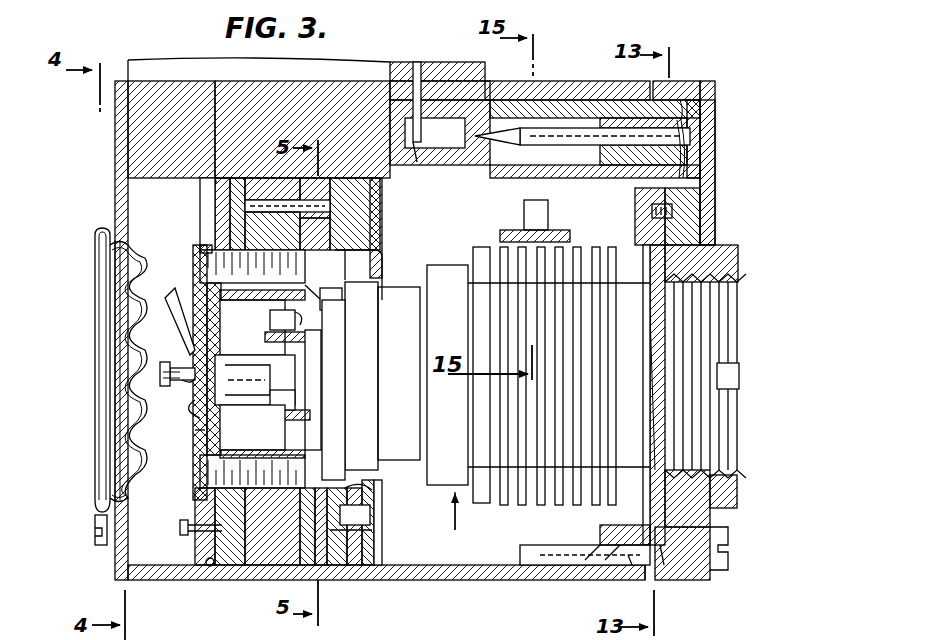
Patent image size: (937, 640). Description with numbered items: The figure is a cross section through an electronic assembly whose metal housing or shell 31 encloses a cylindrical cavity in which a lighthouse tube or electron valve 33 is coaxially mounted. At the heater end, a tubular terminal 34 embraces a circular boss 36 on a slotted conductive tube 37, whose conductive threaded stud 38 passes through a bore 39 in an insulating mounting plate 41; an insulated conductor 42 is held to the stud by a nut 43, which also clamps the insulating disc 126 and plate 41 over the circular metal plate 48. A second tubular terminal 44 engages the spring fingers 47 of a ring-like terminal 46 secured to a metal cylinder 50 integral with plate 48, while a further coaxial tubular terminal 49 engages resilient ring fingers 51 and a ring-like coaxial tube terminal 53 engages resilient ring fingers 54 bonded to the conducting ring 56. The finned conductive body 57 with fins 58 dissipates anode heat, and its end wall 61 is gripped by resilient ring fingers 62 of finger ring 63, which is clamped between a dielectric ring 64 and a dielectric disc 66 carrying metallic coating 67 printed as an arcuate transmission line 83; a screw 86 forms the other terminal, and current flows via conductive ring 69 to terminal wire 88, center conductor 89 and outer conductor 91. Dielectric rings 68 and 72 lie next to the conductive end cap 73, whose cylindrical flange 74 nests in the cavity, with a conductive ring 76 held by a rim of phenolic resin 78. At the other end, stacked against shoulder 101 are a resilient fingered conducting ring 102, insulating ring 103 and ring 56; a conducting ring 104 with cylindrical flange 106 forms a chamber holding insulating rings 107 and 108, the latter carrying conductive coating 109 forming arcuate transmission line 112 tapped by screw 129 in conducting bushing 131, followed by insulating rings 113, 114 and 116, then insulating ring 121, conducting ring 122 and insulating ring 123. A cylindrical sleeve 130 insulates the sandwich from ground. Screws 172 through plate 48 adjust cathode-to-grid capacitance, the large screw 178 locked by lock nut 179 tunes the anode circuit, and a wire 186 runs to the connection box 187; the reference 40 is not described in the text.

The metal housing or shell 31 is at (160, 78).
The lighthouse tube or electron valve 33 is at (508, 369).
The tubular terminal 34 is at (300, 344).
The circular boss 36 is at (265, 393).
The slotted conductive tube 37 is at (195, 418).
The conductive threaded stud 38 is at (185, 368).
The bore 39 is at (182, 382).
The flexible cable 40 is at (121, 386).
The insulating mounting plate 41 is at (196, 432).
The insulated conductor 42 is at (178, 300).
The nut 43 is at (185, 340).
The tubular terminal 44 is at (268, 410).
The ring-like terminal 46 is at (296, 325).
The spring fingers 47 is at (290, 425).
The circular metal plate 48 is at (213, 566).
The coaxial tubular terminal 49 is at (330, 380).
The metal cylinder 50 is at (245, 305).
The resilient ring fingers 51 is at (335, 300).
The ring-like coaxial tube terminal 53 is at (366, 376).
The resilient ring fingers 54 is at (372, 266).
The conducting plate or ring 56 is at (345, 568).
The conductive body 57 is at (495, 319).
The fins 58 is at (538, 508).
The end wall 61 is at (647, 341).
The resilient ring fingers 62 is at (662, 299).
The finger ring 63 is at (740, 251).
The dielectric ring 64 is at (633, 560).
The dielectric disc 66 is at (652, 572).
The metallic coating 67 is at (735, 377).
The dielectric ring 68 is at (673, 570).
The conductive ring 69 is at (683, 238).
The dielectric ring 72 is at (668, 224).
The conductive end cap 73 is at (716, 86).
The cylindrical flange 74 is at (575, 560).
The conductive ring or washer 76 is at (575, 545).
The rim of phenolic resin 78 is at (608, 560).
The arcuate transmission line 83 is at (618, 528).
The screw 86 is at (674, 210).
The terminal wire 88 is at (685, 171).
The center conductor 89 is at (566, 128).
The outer shell or conductor 91 is at (540, 100).
The shoulder 101 is at (372, 182).
The resilient fingered conducting ring 102 is at (383, 546).
The insulating ring 103 is at (370, 568).
The conducting ring 104 is at (245, 566).
The cylindrical flange 106 is at (353, 568).
The insulating ring 107 is at (372, 518).
The insulating ring 108 is at (372, 519).
The conductive coating 109 is at (372, 493).
The arcuate transmission line 112 is at (322, 568).
The insulating ring 113 is at (308, 568).
The insulating ring 114 is at (308, 180).
The insulating ring 116 is at (285, 568).
The insulating ring 121 is at (268, 180).
The conducting ring 122 is at (243, 180).
The insulating ring 123 is at (228, 180).
The insulating disc 126 is at (205, 460).
The screw 129 is at (245, 205).
The cylindrical sleeve 130 is at (210, 180).
The conducting bushing 131 is at (372, 218).
The screws 172 is at (210, 262).
The large screw 178 is at (740, 417).
The lock nut 179 is at (738, 493).
The wire 186 is at (418, 100).
The connection box 187 is at (346, 66).